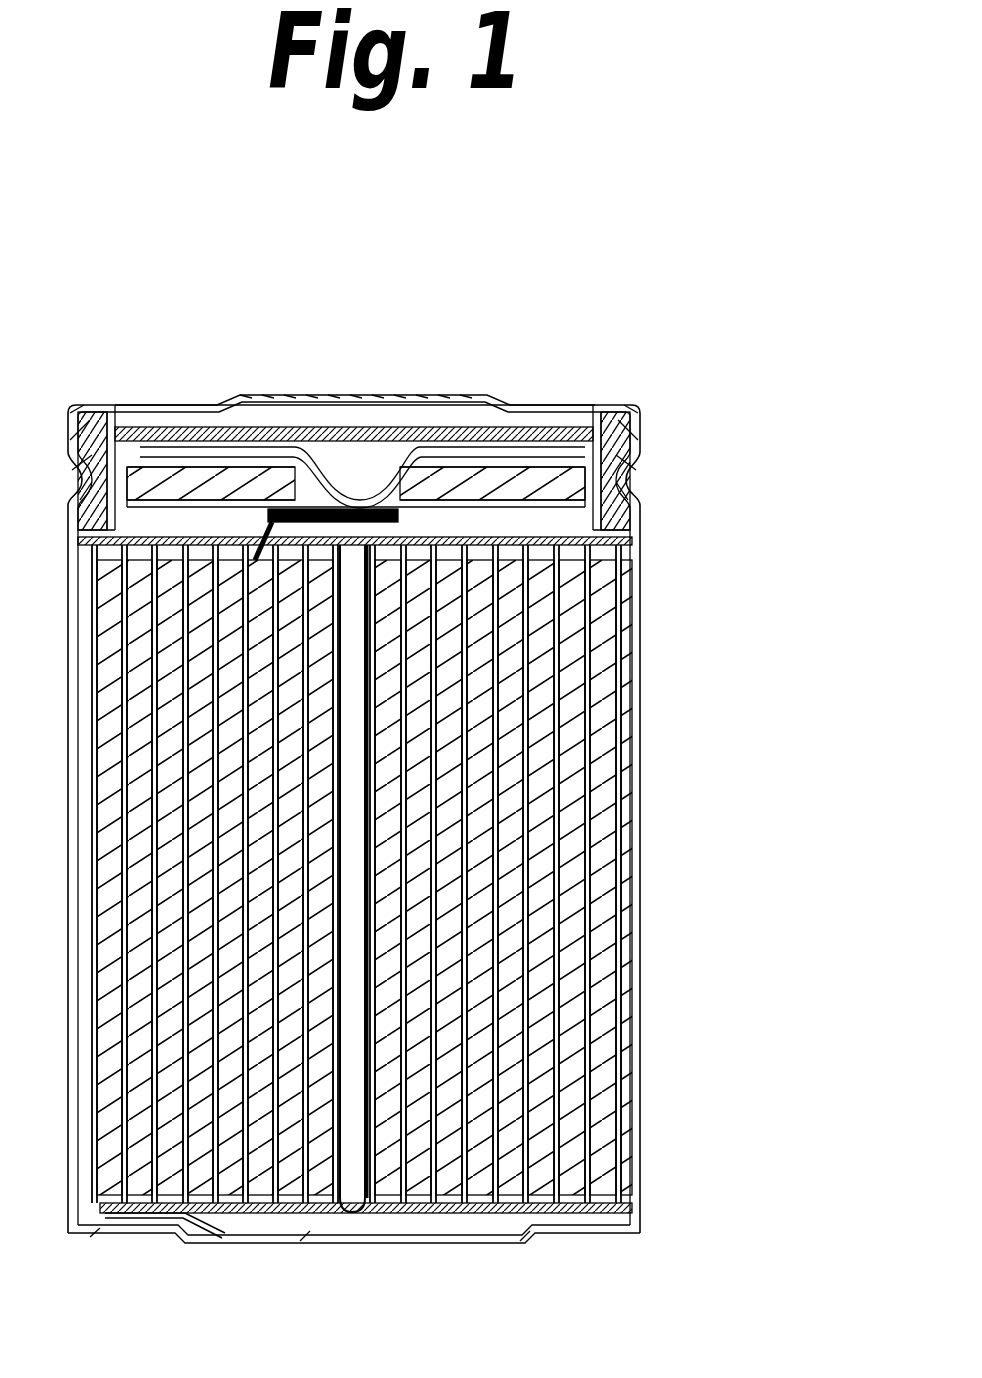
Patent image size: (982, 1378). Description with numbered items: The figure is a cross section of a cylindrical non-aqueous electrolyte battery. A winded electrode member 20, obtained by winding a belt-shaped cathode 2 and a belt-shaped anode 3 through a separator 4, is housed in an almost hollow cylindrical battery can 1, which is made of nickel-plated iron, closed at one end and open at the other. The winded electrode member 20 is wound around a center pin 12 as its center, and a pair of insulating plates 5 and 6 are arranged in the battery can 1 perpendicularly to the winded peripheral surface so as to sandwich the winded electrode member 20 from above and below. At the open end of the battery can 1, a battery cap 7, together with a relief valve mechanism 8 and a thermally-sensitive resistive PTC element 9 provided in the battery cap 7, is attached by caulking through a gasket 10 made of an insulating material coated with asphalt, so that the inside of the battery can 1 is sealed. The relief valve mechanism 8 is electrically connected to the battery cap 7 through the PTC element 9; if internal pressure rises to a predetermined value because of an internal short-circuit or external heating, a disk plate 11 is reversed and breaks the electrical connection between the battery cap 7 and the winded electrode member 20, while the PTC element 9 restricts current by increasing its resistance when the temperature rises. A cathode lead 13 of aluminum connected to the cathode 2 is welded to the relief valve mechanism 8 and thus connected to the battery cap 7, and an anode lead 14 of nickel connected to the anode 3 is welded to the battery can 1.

The battery can 1 is at (645, 612).
The cathode 2 is at (565, 800).
The anode 3 is at (615, 835).
The separator 4 is at (595, 880).
The insulating plate 5 is at (640, 538).
The insulating plate 6 is at (640, 1215).
The battery cap 7 is at (346, 395).
The relief valve mechanism 8 is at (465, 455).
The thermally-sensitive resistive element (PTC element) 9 is at (637, 447).
The gasket 10 is at (630, 487).
The disk plate 11 is at (435, 470).
The center pin 12 is at (355, 946).
The cathode lead 13 is at (315, 497).
The anode lead 14 is at (218, 1245).
The winded electrode member 20 is at (415, 874).